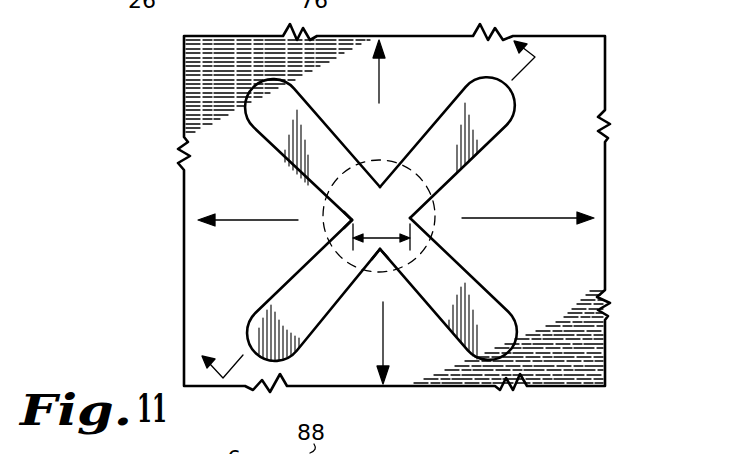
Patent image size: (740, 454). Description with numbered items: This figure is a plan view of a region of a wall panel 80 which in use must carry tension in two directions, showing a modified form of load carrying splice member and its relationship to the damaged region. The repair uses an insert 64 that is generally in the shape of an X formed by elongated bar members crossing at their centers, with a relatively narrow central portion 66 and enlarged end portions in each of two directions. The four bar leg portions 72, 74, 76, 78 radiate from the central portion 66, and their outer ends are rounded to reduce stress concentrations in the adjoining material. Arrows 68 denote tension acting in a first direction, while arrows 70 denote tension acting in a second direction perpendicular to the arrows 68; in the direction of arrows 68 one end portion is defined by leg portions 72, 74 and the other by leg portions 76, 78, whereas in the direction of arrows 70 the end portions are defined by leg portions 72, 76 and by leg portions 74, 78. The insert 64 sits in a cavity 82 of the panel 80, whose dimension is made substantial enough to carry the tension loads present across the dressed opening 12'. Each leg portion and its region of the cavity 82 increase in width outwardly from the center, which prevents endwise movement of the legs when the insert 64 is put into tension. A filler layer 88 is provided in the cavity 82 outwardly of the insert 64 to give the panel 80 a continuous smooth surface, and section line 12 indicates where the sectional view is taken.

The section line 12 is at (389, 230).
The dressed opening 12' is at (435, 238).
The insert 64 is at (297, 237).
The central portion 66 is at (402, 202).
The arrows denoting tension in a first direction 68 is at (213, 200).
The arrows denoting tension in a second direction 70 is at (380, 80).
The leg portion 72 is at (253, 111).
The leg portion 74 is at (262, 328).
The leg portion 76 is at (497, 113).
The leg portion 78 is at (498, 327).
The panel 80 is at (575, 252).
The cavity 82 is at (385, 237).
The filler layer 88 is at (325, 215).